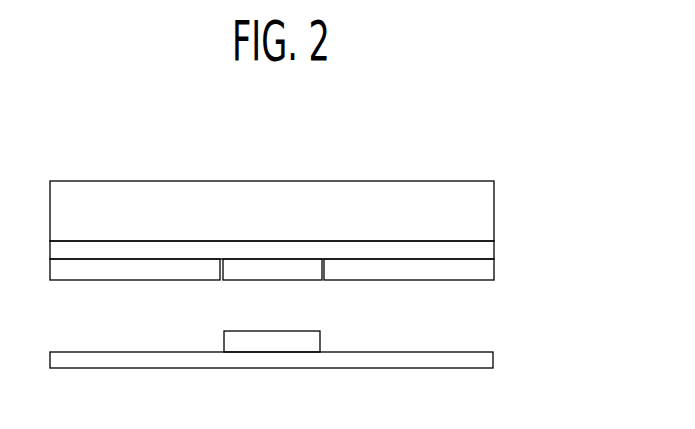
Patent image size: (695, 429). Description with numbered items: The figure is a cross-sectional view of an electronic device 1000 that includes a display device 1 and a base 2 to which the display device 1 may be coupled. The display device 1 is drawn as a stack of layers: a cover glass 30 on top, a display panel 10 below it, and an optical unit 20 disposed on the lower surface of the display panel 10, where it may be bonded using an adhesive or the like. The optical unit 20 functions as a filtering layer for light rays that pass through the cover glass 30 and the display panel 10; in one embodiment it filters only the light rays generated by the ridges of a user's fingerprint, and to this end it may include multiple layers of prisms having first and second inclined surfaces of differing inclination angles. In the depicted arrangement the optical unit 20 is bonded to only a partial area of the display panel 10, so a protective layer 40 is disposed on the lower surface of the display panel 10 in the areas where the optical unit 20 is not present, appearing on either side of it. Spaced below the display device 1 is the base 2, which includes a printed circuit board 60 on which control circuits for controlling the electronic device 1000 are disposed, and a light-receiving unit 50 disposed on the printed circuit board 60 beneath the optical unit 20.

The electronic device 1000 is at (513, 137).
The display device 1 is at (48, 182).
The base 2 is at (47, 332).
The display panel 10 is at (488, 248).
The optical unit 20 is at (280, 270).
The cover glass 30 is at (488, 218).
The protective layer 40 is at (488, 270).
The light-receiving unit 50 is at (318, 340).
The printed circuit board 60 is at (490, 360).